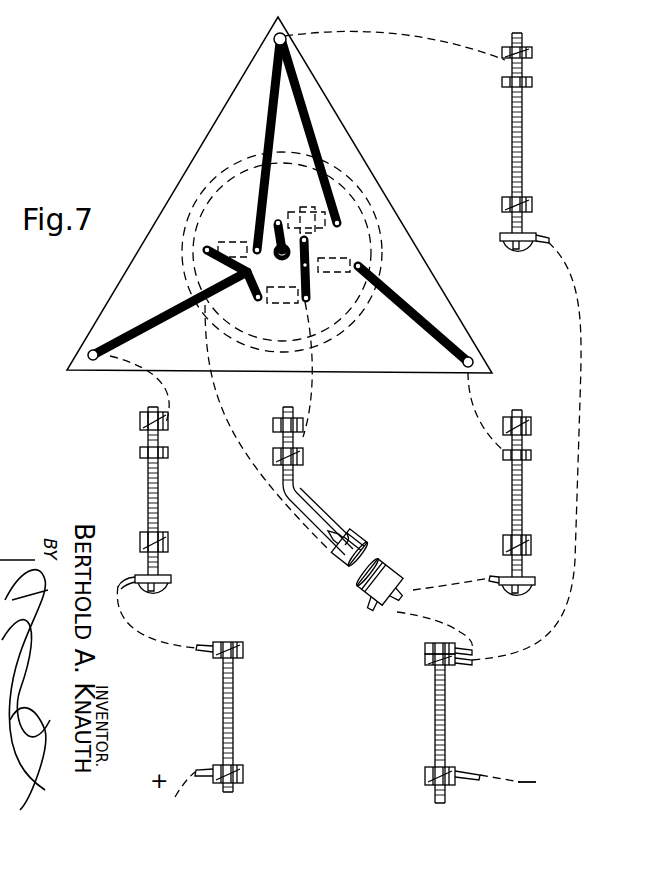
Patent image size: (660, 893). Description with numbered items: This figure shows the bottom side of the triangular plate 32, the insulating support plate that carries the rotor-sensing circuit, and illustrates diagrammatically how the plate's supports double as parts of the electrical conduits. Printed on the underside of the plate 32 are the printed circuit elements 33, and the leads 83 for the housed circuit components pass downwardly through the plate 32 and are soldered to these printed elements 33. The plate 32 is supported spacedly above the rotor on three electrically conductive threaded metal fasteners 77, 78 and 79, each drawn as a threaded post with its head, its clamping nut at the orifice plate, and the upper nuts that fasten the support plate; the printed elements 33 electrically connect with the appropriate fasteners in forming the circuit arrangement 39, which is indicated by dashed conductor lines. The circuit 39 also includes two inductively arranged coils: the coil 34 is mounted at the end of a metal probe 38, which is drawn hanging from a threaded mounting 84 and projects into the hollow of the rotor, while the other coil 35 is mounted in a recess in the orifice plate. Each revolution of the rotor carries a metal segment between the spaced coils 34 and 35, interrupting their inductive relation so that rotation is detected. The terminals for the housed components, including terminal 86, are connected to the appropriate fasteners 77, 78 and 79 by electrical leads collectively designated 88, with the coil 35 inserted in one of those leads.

The triangular plate 32 is at (404, 223).
The printed circuit elements 33 is at (168, 322).
The leads 83 is at (255, 247).
The coil 34 is at (360, 540).
The coil 35 is at (392, 568).
The metal probe 38 is at (310, 498).
The circuit arrangement 39 is at (582, 442).
The threaded metal fastener 77 is at (159, 491).
The threaded metal fastener 78 is at (523, 491).
The threaded metal fastener 79 is at (523, 146).
The threaded rod 84 is at (278, 430).
The terminal 86 is at (434, 797).
The electrical leads 88 is at (197, 646).